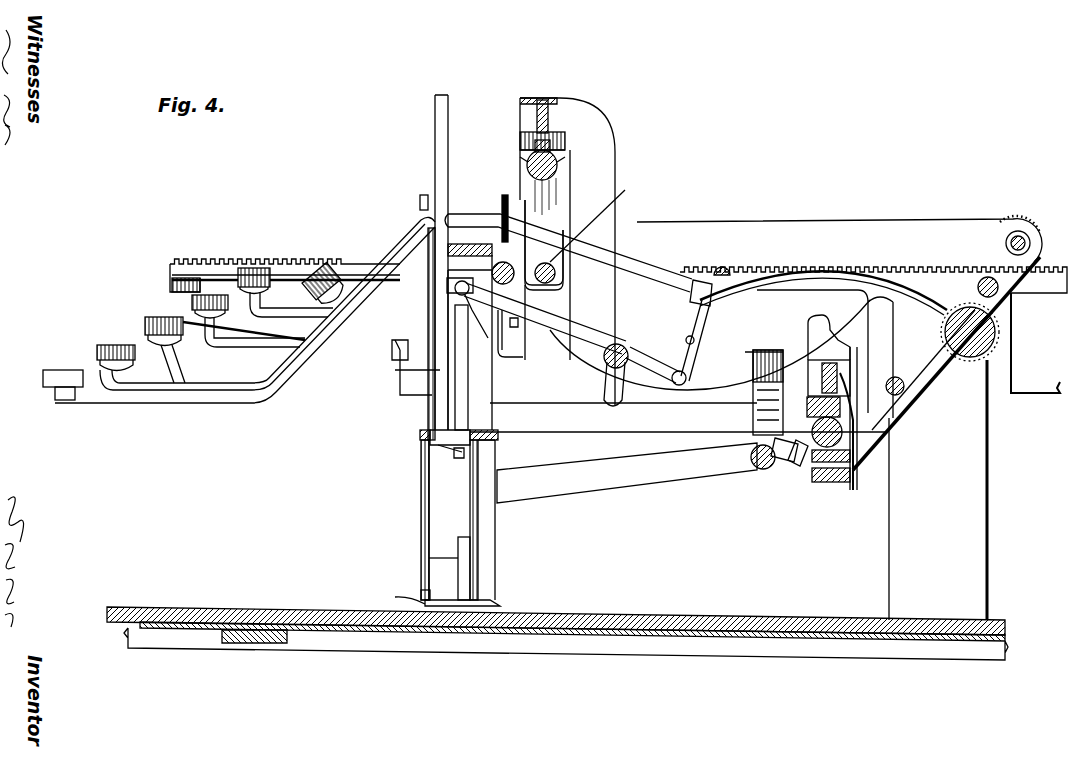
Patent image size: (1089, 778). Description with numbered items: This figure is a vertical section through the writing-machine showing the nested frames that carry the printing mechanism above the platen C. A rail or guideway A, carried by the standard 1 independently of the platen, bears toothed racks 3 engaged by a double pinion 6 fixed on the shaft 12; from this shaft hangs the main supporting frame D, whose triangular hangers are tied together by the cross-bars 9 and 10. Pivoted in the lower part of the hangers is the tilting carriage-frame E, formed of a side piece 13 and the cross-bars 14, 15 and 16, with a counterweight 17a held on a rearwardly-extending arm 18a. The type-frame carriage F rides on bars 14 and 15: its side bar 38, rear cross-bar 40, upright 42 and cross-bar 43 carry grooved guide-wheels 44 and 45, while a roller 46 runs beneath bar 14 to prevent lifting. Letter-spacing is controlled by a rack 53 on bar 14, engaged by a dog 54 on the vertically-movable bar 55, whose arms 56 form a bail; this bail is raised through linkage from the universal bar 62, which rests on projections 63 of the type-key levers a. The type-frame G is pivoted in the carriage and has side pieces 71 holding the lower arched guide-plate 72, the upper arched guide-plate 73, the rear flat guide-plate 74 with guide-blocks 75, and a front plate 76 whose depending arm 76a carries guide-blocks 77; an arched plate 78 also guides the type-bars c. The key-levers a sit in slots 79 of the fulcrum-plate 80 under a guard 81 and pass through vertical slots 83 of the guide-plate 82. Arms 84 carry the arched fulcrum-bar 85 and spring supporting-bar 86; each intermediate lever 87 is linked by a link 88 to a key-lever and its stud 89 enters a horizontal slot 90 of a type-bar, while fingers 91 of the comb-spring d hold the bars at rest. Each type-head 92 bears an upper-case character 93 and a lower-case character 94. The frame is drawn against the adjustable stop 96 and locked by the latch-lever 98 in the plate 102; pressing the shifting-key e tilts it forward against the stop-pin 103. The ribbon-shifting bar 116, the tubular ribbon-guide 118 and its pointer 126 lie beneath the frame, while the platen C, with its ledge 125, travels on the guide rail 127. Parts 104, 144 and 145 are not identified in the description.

The standard or upright 1 is at (987, 493).
The toothed rack 3 is at (1062, 272).
The double pinion 6 is at (1020, 218).
The cross-bar 9 is at (1015, 300).
The cross-bar 10 is at (905, 390).
The shaft 12 is at (1006, 240).
The side piece 13 is at (650, 250).
The cross-bar 14 is at (842, 432).
The cross-bar 15 is at (533, 158).
The cross-bar 16 is at (568, 228).
The counterweight 17a is at (1003, 335).
The rearwardly-extending arm 18a is at (840, 275).
The side bar 38 is at (558, 384).
The cross-bar 40 is at (848, 403).
The upright 42 is at (590, 120).
The cross-bar 43 is at (560, 88).
The grooved guide-wheel 44 is at (900, 428).
The grooved guide-wheel 45 is at (528, 150).
The roller 46 is at (850, 484).
The rack 53 is at (803, 470).
The dog 54 is at (792, 470).
The vertically-movable bar 55 is at (764, 472).
The arm 56 is at (650, 475).
The universal bar 62 is at (702, 282).
The projection 63 is at (740, 270).
The side piece 71 is at (486, 380).
The lower arched guide-plate 72 is at (498, 438).
The upper arched guide-plate 73 is at (470, 243).
The flat guide-plate 74 is at (480, 514).
The guide-block 75 is at (465, 565).
The plate 76 is at (420, 470).
The depending arm 76a is at (420, 527).
The guide-block 77 is at (420, 593).
The arched plate 78 is at (433, 372).
The slot 79 is at (426, 195).
The fulcrum-plate 80 is at (430, 235).
The guard 81 is at (422, 196).
The guide-plate 82 is at (548, 197).
The vertical slot 83 is at (504, 200).
The arm 84 is at (677, 417).
The arched fulcrum-bar 85 is at (618, 400).
The spring supporting-bar 86 is at (758, 398).
The intermediate lever 87 is at (580, 303).
The link 88 is at (748, 350).
The stud 89 is at (479, 324).
The horizontal slot 90 is at (462, 274).
The spring-finger 91 is at (704, 380).
The type-head 92 is at (440, 440).
The upper-case character 93 is at (455, 450).
The lower-case character 94 is at (454, 455).
The adjustable stop 96 is at (519, 333).
The latch-lever 98 is at (360, 290).
The plate 102 is at (350, 348).
The adjustable stop-pin 103 is at (380, 365).
The bracket 104 is at (826, 332).
The ribbon-shifting bar 116 is at (512, 283).
The tubular ribbon-guide 118 is at (500, 602).
The ledge or guide 125 is at (232, 592).
The pointer or indicator 126 is at (395, 597).
The platen guide rail 127 is at (940, 658).
The pipe 144 is at (145, 403).
The nozzle 145 is at (62, 372).
The rail or guideway A is at (212, 262).
The platen C is at (240, 609).
The main supporting frame D is at (840, 222).
The tilting carriage-frame E is at (485, 310).
The type-frame carriage F is at (582, 293).
The type-frame G is at (422, 495).
The type-key lever a is at (622, 265).
The type-bar c is at (437, 393).
The comb-spring d is at (772, 356).
The shifting-key e is at (314, 266).